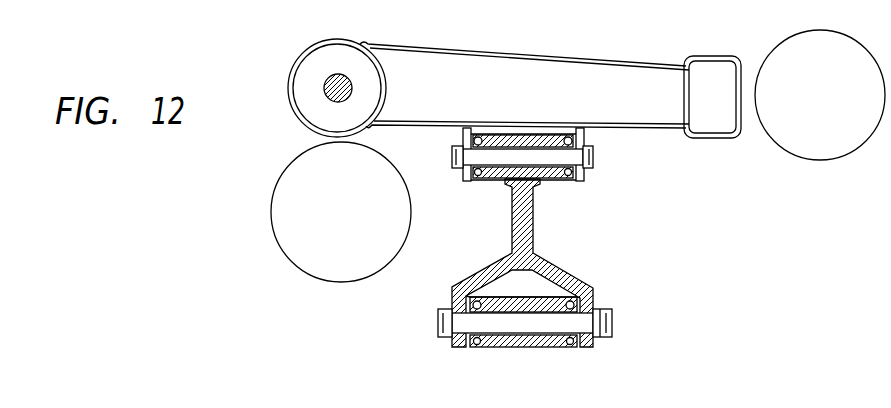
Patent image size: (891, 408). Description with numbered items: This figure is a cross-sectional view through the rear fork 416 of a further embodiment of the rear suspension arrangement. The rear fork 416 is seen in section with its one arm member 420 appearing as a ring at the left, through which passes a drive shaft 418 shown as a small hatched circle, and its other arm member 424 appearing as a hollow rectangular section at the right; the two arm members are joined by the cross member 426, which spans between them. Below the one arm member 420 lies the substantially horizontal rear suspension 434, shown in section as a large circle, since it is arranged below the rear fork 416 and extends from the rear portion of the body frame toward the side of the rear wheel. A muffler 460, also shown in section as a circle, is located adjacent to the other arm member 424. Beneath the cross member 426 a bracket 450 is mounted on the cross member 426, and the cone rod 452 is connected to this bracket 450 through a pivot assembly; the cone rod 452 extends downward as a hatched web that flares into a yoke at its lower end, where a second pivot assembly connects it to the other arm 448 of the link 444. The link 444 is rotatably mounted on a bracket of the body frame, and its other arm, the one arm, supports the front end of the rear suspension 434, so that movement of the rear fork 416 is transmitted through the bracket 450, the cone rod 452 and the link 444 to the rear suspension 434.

The rear fork 416 is at (489, 50).
The drive shaft 418 is at (338, 74).
The arm member 420 is at (306, 50).
The other arm member 424 is at (720, 56).
The cross member 426 is at (608, 72).
The rear suspension 434 is at (343, 277).
The link 444 is at (238, 12).
The other arm 448 is at (523, 348).
The bracket 450 is at (585, 141).
The cone rod 452 is at (512, 223).
The muffler 460 is at (800, 158).